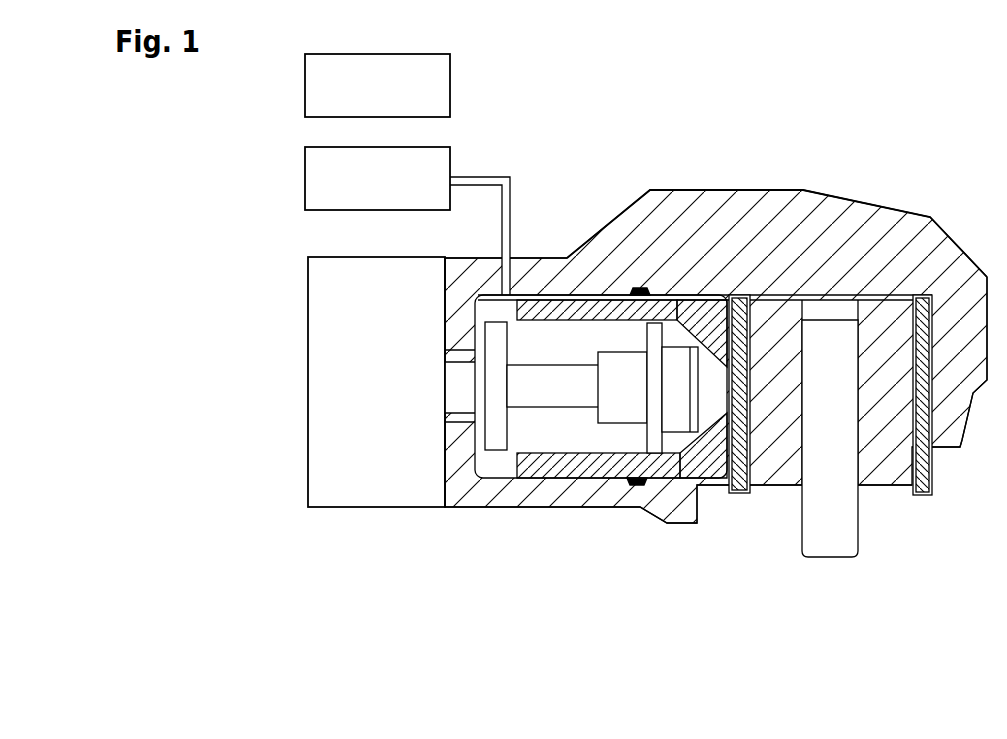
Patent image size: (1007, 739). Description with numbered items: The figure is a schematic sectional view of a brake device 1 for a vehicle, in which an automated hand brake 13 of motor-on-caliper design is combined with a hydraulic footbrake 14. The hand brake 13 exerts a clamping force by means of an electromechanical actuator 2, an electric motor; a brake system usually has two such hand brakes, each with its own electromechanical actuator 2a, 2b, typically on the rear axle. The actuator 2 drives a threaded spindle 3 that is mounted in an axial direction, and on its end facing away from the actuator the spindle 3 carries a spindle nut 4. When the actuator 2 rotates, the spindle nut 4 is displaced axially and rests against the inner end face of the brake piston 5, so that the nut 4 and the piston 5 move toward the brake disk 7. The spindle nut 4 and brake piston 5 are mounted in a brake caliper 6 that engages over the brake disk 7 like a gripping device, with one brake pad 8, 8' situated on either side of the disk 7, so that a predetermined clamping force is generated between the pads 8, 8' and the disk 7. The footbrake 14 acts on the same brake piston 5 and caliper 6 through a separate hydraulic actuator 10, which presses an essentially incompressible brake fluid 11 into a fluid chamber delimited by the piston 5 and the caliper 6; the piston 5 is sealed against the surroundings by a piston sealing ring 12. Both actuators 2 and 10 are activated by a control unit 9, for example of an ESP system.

The brake device 1 is at (716, 309).
The electromechanical actuator 2 is at (324, 375).
The electromechanical actuator 2a is at (376, 382).
The electromechanical actuator 2b is at (353, 318).
The spindle 3 is at (550, 388).
The spindle nut 4 is at (620, 400).
The brake piston 5 is at (533, 473).
The brake caliper 6 is at (735, 197).
The brake disk 7 is at (832, 538).
The brake pad 8 is at (750, 448).
The brake pad 8' is at (905, 448).
The control unit 9 is at (462, 82).
The hydraulic actuator 10 is at (417, 171).
The brake fluid 11 is at (700, 447).
The piston sealing ring 12 is at (640, 483).
The automated hand brake 13 is at (324, 415).
The footbrake 14 is at (470, 177).